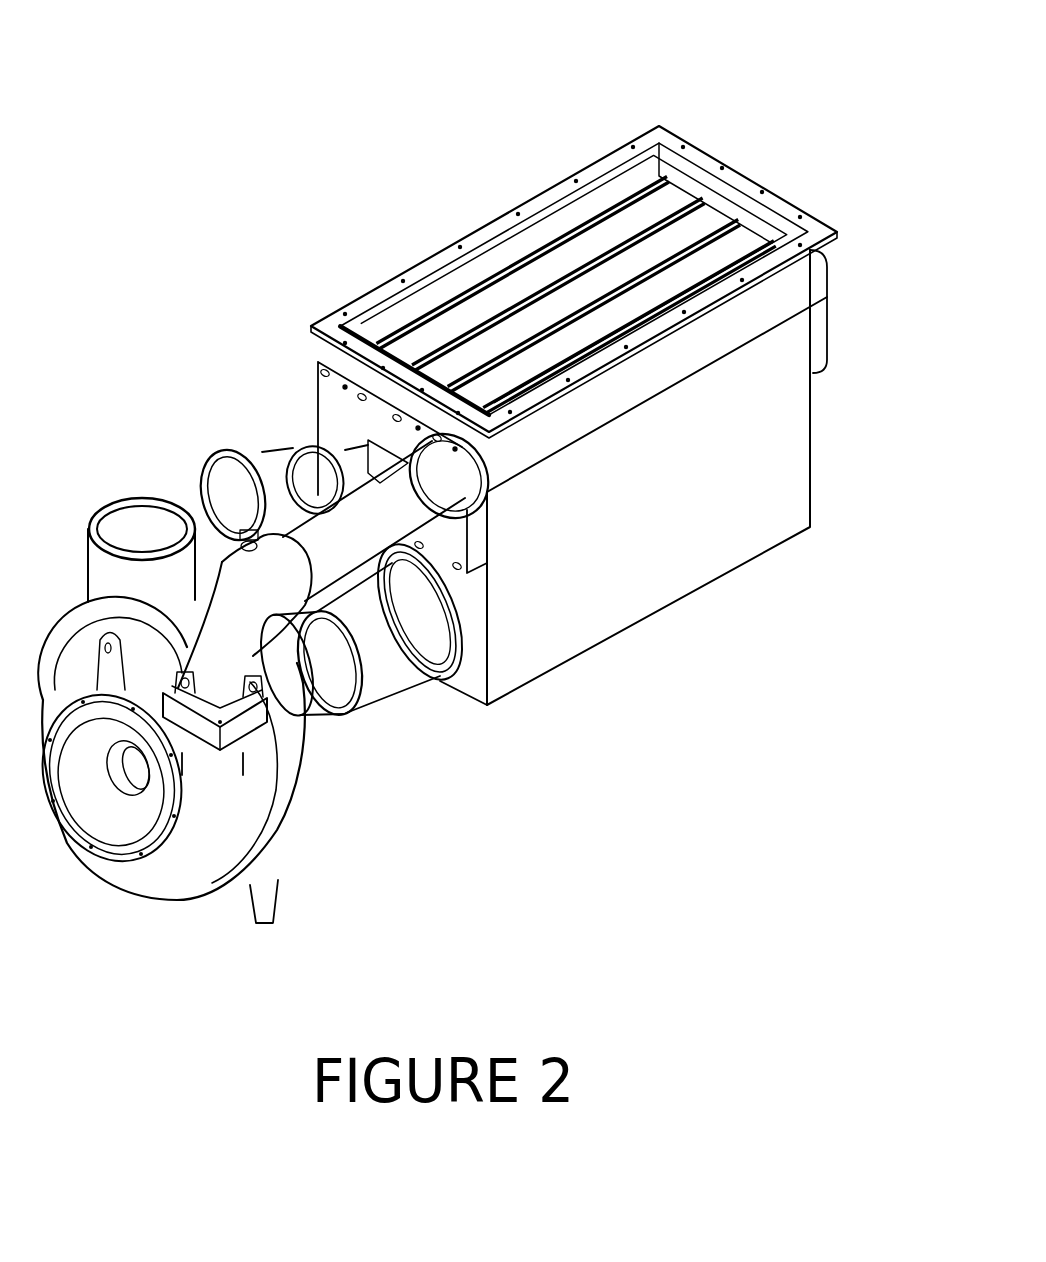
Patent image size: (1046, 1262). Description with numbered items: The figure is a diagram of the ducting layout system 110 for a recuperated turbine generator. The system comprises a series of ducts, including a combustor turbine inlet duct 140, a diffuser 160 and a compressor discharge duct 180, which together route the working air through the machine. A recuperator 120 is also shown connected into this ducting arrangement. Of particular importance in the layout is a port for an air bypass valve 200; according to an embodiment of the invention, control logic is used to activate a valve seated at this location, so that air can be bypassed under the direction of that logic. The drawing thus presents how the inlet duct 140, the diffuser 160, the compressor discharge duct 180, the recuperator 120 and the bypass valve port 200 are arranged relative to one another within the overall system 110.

The ducting layout system 110 is at (439, 471).
The recuperator 120 is at (739, 529).
The combustor turbine inlet duct 140 is at (260, 466).
The diffuser 160 is at (360, 642).
The compressor discharge duct 180 is at (236, 632).
The port for an air bypass valve 200 is at (279, 572).